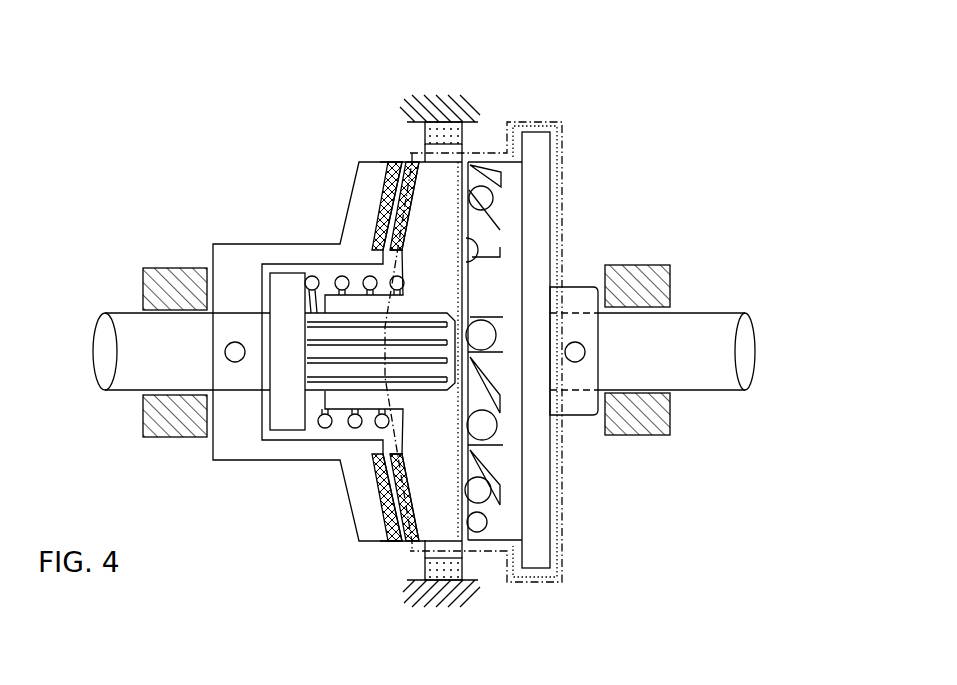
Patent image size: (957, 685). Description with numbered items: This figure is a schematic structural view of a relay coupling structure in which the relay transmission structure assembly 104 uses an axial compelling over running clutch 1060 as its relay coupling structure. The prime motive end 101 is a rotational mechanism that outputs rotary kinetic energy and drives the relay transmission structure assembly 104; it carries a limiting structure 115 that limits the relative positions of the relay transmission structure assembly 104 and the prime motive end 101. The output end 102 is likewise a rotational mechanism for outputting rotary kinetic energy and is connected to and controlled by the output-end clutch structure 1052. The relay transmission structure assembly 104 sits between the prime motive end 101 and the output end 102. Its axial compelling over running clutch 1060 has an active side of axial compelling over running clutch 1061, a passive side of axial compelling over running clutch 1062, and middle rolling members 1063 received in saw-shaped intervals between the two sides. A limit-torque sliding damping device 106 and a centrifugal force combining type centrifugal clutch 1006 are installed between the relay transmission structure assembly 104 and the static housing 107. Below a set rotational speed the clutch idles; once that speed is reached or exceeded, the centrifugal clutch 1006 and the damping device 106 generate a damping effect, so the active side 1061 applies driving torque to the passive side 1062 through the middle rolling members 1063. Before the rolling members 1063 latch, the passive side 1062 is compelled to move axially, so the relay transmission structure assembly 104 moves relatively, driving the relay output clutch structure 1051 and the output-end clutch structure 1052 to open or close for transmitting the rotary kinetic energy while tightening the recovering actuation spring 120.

The prime motive end 101 is at (710, 330).
The output end 102 is at (122, 327).
The relay transmission structure assembly 104 is at (533, 122).
The limit-torque sliding damping device 106 is at (453, 135).
The static housing 107 is at (428, 107).
The limiting structure 115 is at (580, 412).
The recovering actuation spring 120 is at (342, 277).
The centrifugal force combining type centrifugal clutch 1006 is at (427, 146).
The relay output clutch structure 1051 is at (413, 525).
The output-end clutch structure 1052 is at (380, 482).
The axial compelling over running clutch 1060 is at (563, 180).
The active side of axial compelling over running clutch 1061 is at (475, 226).
The passive side of axial compelling over running clutch 1062 is at (464, 286).
The middle rolling members 1063 is at (500, 427).